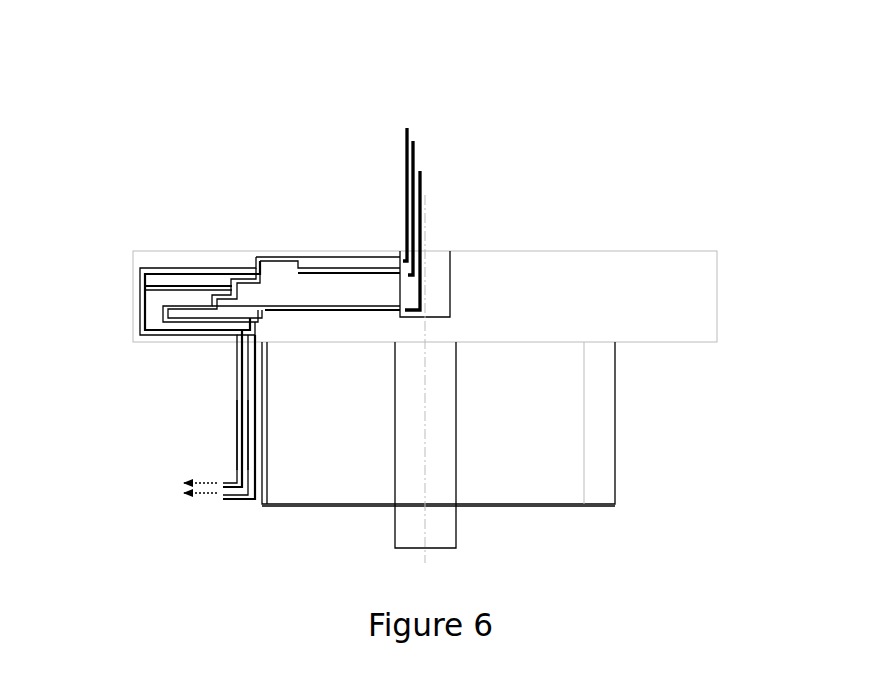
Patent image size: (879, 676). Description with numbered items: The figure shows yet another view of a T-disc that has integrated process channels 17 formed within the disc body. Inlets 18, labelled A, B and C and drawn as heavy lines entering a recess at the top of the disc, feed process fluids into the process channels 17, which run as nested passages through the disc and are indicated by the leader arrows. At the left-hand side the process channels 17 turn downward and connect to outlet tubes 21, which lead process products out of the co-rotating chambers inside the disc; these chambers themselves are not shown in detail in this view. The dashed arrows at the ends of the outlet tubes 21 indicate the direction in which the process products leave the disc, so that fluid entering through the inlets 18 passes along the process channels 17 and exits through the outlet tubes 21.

The process channels 17 is at (332, 250).
The inlets 18 is at (414, 209).
The outlet tubes 21 is at (238, 377).